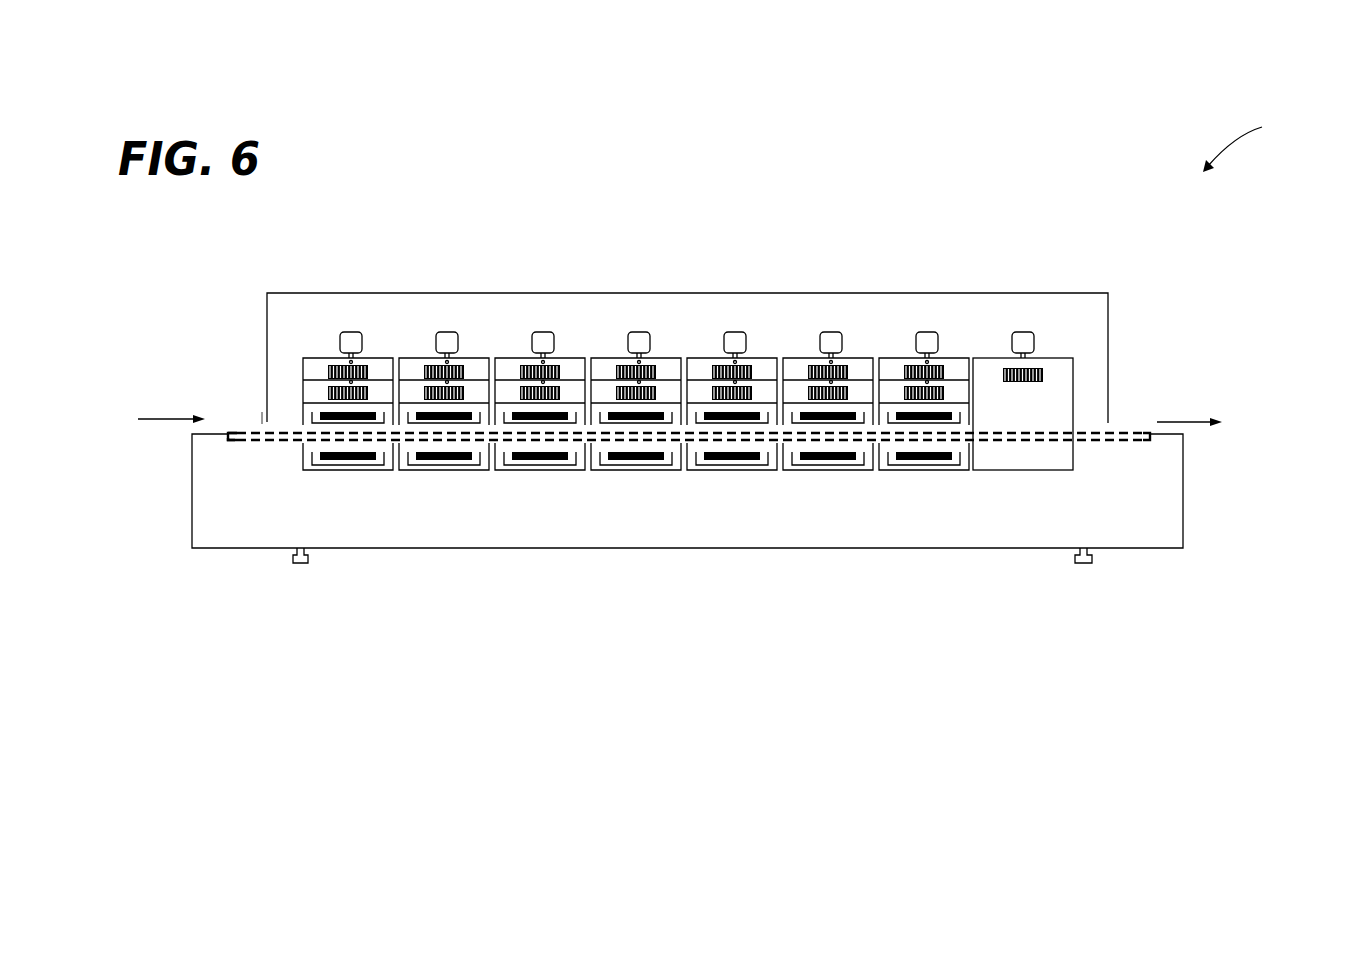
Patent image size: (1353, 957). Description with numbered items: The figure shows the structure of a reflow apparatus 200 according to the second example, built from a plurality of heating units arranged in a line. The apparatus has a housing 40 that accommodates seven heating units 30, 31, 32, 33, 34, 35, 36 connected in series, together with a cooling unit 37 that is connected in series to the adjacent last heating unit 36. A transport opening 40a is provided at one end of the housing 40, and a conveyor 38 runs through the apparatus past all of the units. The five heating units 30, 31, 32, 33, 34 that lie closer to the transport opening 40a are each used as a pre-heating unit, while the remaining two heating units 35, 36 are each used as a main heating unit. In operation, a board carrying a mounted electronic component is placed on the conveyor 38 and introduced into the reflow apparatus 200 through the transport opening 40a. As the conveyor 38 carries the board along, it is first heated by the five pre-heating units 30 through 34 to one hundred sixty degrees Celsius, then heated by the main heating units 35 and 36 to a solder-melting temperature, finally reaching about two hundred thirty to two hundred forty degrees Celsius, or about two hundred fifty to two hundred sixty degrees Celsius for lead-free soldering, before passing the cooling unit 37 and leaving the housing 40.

The reflow apparatus 200 is at (795, 266).
The heating unit 30 is at (380, 358).
The heating unit 31 is at (472, 358).
The heating unit 32 is at (567, 358).
The heating unit 33 is at (663, 358).
The heating unit 34 is at (760, 358).
The heating unit 35 is at (857, 358).
The heating unit 36 is at (958, 358).
The cooling unit 37 is at (1048, 358).
The conveyor 38 is at (247, 427).
The housing 40 is at (1110, 367).
The transport opening 40a is at (263, 424).